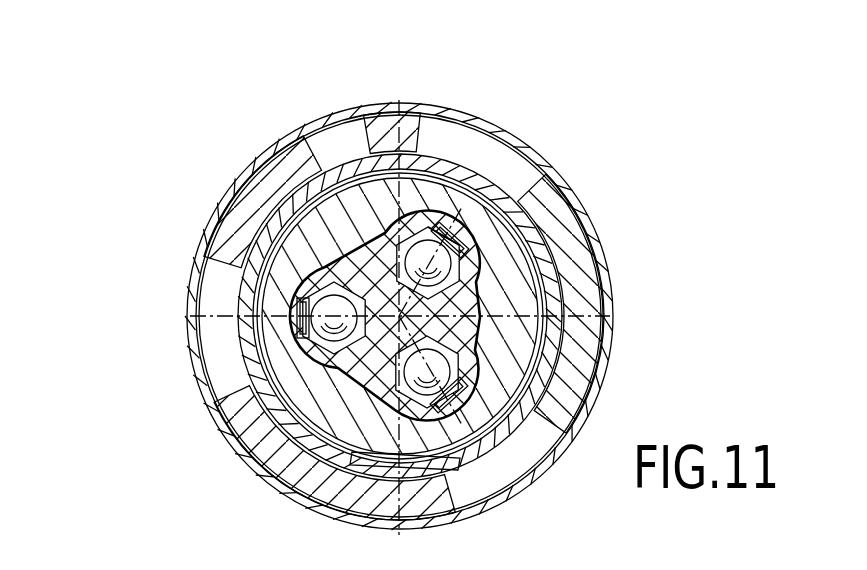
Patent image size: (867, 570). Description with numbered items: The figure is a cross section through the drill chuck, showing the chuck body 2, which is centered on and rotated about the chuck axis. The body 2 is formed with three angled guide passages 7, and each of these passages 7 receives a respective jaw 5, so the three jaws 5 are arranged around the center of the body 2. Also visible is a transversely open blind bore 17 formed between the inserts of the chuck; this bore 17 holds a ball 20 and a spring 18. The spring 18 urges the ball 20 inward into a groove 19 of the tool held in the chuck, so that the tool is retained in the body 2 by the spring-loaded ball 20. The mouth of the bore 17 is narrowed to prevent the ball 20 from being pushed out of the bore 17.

The chuck body 2 is at (367, 207).
The jaw 5 is at (420, 215).
The angled guide passage 7 is at (305, 430).
The blind bore 17 is at (482, 373).
The spring 18 is at (462, 215).
The groove 19 is at (365, 272).
The ball 20 is at (458, 252).